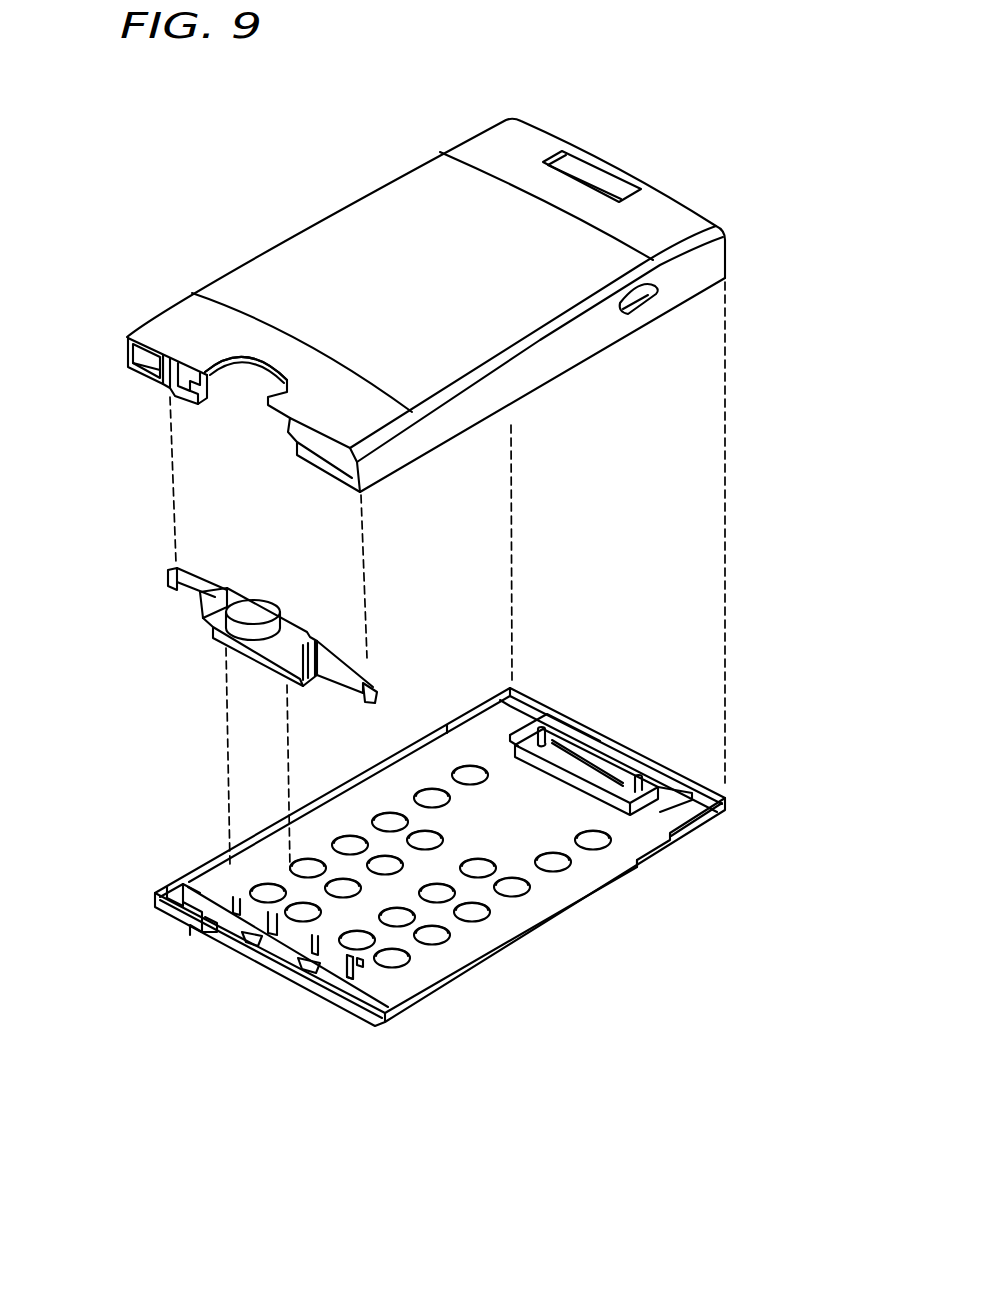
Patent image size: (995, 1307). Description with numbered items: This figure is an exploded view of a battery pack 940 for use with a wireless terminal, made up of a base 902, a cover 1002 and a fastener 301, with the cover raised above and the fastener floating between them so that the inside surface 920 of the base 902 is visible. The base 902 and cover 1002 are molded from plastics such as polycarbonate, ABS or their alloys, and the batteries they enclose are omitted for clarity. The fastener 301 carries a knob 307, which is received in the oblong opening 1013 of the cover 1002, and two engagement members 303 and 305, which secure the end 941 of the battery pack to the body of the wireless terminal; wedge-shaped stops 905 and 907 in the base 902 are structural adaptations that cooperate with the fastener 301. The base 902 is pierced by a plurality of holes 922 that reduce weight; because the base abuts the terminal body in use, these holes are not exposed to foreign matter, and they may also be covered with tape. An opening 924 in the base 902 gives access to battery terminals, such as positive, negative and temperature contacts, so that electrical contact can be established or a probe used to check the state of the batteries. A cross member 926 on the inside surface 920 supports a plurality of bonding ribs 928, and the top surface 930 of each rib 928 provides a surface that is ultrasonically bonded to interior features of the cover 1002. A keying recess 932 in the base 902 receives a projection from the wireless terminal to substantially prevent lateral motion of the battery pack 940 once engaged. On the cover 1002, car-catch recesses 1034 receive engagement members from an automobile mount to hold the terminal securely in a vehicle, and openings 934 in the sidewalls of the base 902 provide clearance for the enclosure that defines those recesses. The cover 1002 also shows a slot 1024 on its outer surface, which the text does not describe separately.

The cover 1002 is at (337, 212).
The rectangular opening in cover 1024 is at (597, 178).
The oblong opening 1013 is at (213, 373).
The car-catch recesses 1034 is at (638, 312).
The battery pack 940 is at (767, 394).
The end of the battery pack 941 is at (128, 400).
The fastener 301 is at (210, 626).
The engagement member 303 is at (213, 608).
The engagement member 305 is at (285, 650).
The knob 307 is at (258, 610).
The base 902 is at (403, 892).
The openings in the sidewalls 934 is at (432, 730).
The holes 922 is at (516, 892).
The opening 924 is at (578, 746).
The inside surface 920 is at (645, 834).
The top surface 930 is at (342, 934).
The keying recess 932 is at (183, 926).
The cross member 926 is at (379, 990).
The wedge-shaped stop 905 is at (247, 935).
The wedge-shaped stop 907 is at (301, 972).
The bonding ribs 928 is at (348, 960).